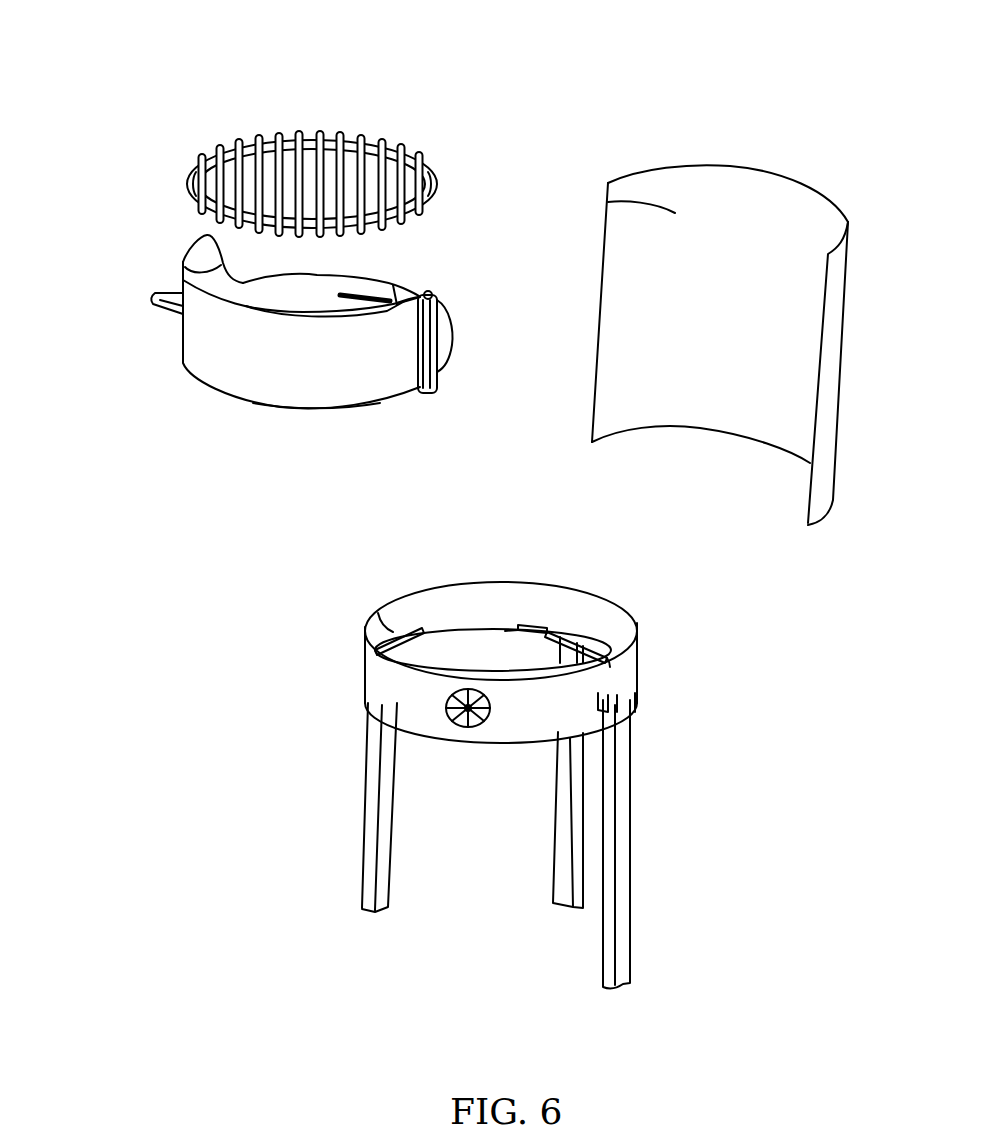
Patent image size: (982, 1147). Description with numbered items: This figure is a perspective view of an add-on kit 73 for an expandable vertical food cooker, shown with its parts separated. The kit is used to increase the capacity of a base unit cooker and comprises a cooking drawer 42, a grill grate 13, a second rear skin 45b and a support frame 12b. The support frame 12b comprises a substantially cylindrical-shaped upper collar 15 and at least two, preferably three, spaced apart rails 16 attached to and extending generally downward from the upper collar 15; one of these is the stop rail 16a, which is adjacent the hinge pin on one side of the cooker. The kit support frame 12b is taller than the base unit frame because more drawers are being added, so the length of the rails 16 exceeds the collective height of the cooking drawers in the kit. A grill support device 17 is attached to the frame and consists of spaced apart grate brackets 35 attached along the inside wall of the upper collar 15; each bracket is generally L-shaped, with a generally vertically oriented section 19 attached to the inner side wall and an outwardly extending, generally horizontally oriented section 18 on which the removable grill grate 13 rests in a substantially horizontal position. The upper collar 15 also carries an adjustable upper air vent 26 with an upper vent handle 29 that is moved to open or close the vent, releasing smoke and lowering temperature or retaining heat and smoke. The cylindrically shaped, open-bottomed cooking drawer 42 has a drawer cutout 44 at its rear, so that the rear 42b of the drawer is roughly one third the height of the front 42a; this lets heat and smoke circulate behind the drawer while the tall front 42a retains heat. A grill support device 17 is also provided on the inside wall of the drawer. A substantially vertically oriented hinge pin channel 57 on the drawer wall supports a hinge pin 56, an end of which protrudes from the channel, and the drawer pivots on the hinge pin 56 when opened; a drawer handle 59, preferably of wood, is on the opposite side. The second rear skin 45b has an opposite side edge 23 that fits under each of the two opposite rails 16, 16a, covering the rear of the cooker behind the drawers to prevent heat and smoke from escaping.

The grill grate 13 is at (172, 161).
The cooking drawer 42 is at (271, 369).
The drawer cutout 44 is at (232, 304).
The drawer handle 59 is at (178, 313).
The rear of the cooking drawer 42b is at (280, 290).
The front of the cooking drawer 42a is at (243, 395).
The hinge pin 56 is at (426, 396).
The hinge pin channel 57 is at (420, 362).
The grill support device 17 is at (382, 292).
The add-on kit 73 is at (746, 287).
The second rear skin 45b is at (758, 180).
The side edge of the rear skin 23 is at (656, 217).
The support frame 12b is at (536, 751).
The upper collar 15 is at (437, 594).
The upper vent handle 29 is at (370, 690).
The grate bracket 35 is at (373, 620).
The horizontally oriented section 18 is at (533, 625).
The vertically oriented section 19 is at (518, 630).
The upper air vent 26 is at (610, 667).
The rail 16 is at (378, 850).
The stop rail 16a is at (623, 937).